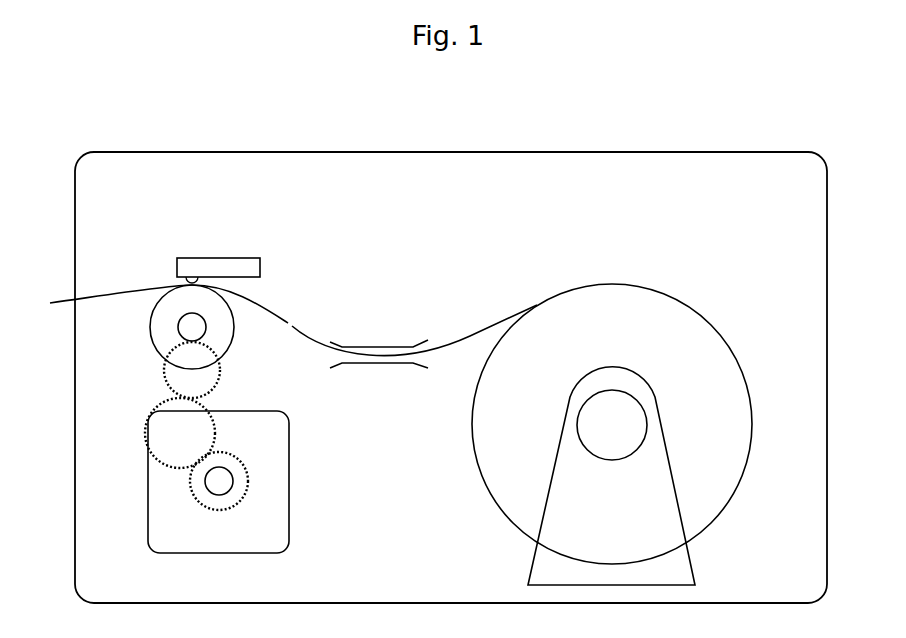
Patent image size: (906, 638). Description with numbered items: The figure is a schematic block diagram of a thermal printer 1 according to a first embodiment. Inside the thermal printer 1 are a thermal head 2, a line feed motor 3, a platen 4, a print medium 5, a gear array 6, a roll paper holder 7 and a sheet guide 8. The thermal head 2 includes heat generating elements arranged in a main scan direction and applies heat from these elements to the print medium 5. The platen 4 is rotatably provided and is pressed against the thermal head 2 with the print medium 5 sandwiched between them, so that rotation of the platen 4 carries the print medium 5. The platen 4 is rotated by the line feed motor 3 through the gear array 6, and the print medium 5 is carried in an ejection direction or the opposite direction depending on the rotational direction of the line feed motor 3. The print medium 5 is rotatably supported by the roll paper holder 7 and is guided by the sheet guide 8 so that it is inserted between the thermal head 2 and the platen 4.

The thermal printer 1 is at (569, 152).
The thermal head 2 is at (247, 265).
The line feed motor 3 is at (275, 482).
The platen 4 is at (163, 328).
The print medium 5 is at (697, 327).
The gear array 6 is at (223, 370).
The roll paper holder 7 is at (682, 580).
The sheet guide 8 is at (382, 342).